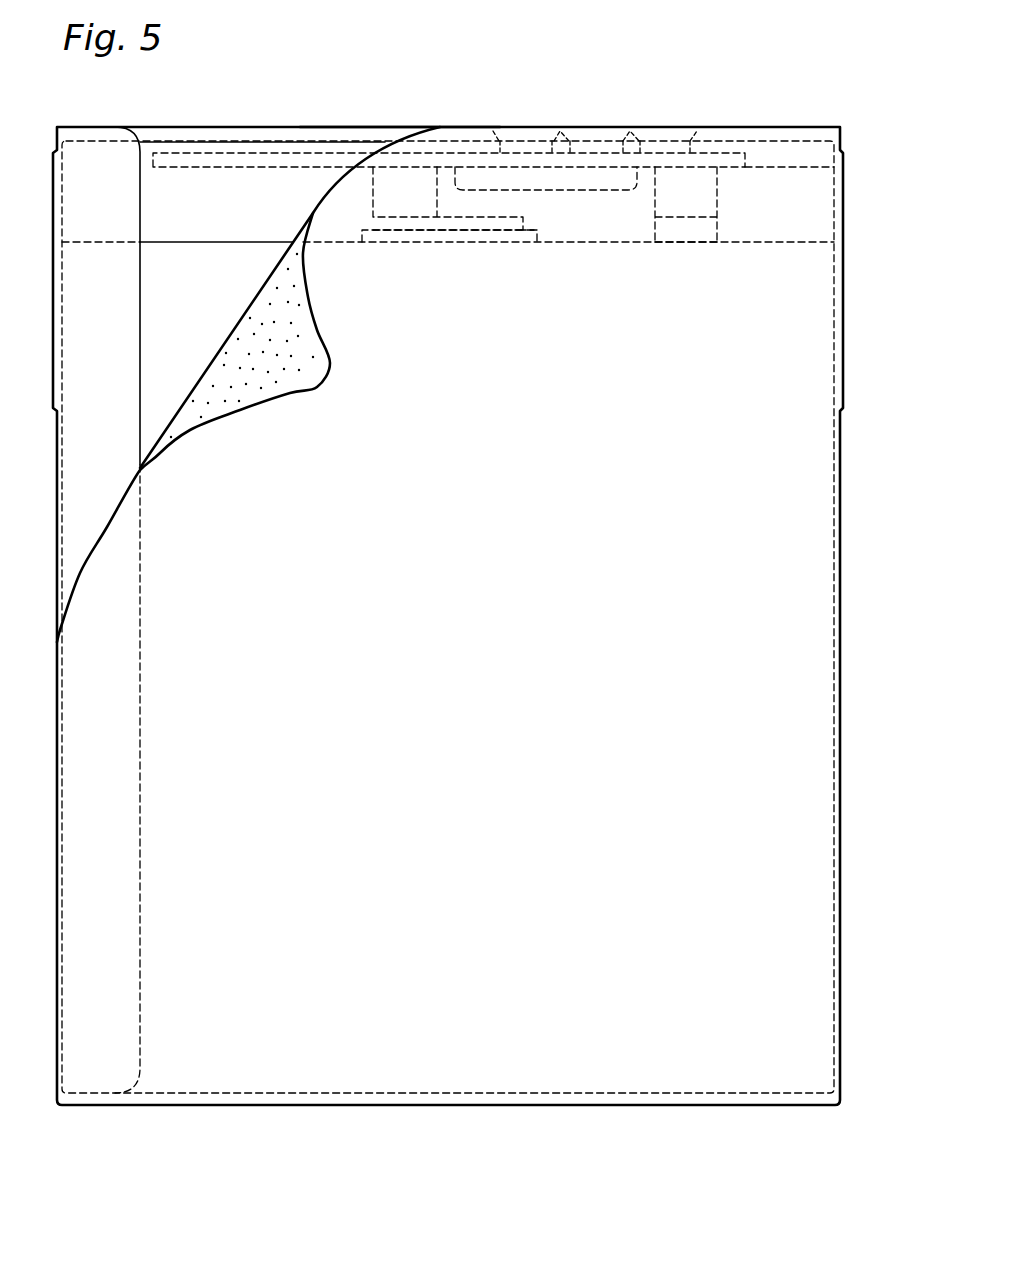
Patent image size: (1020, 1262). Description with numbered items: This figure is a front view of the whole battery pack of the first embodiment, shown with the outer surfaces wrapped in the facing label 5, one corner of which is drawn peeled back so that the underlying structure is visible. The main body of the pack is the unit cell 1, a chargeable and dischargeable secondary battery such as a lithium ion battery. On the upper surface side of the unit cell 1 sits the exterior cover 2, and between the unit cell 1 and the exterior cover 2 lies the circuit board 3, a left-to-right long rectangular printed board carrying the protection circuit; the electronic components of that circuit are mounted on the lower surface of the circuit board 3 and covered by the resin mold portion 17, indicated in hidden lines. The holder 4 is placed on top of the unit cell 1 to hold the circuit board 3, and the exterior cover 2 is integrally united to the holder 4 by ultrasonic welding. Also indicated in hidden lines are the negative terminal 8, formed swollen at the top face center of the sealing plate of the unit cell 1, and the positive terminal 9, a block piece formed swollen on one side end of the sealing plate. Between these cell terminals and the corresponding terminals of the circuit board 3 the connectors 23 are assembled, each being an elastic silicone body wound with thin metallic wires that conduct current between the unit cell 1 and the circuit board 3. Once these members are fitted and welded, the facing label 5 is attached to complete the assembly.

The unit cell 1 is at (780, 492).
The exterior cover 2 is at (340, 126).
The circuit board 3 is at (255, 150).
The holder 4 is at (772, 167).
The facing label 5 is at (258, 372).
The negative terminal 8 is at (467, 223).
The positive terminal 9 is at (688, 232).
The mold portion 17 is at (590, 190).
The connector 23 is at (411, 180).